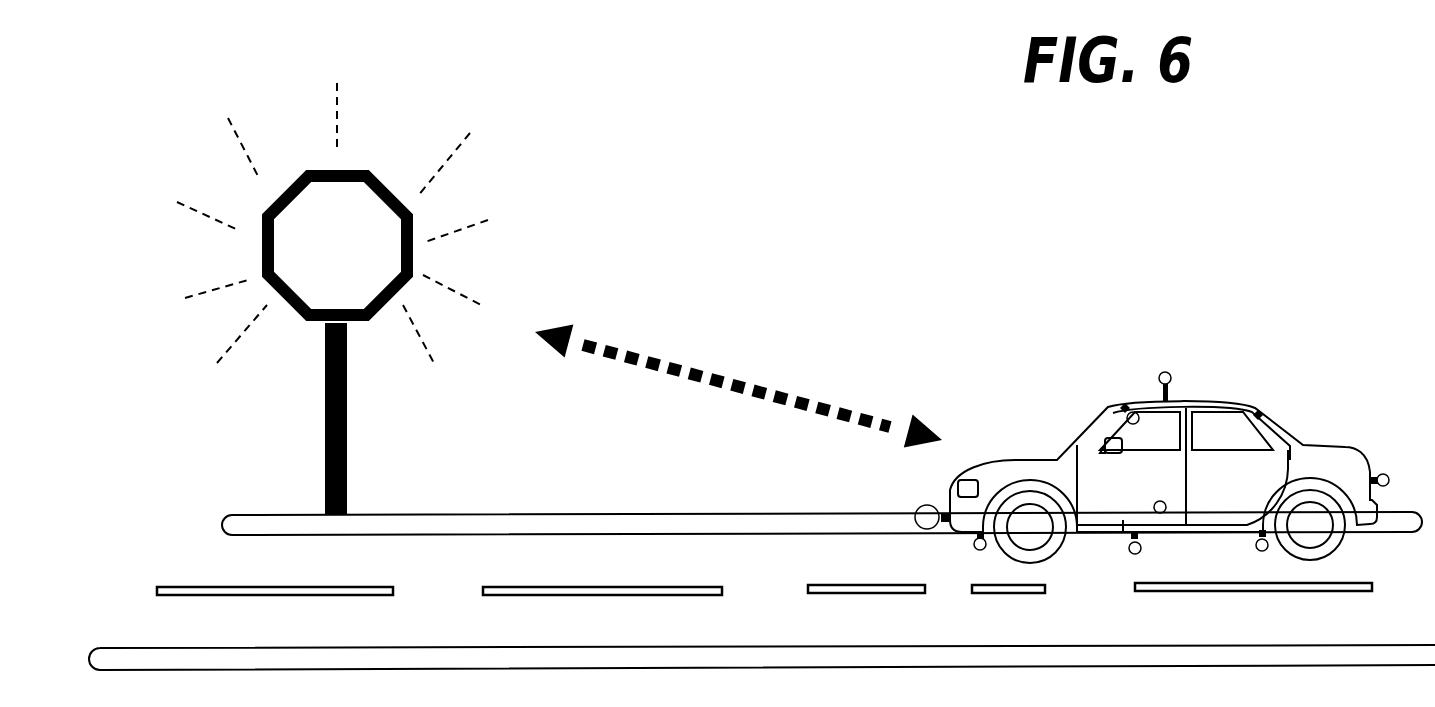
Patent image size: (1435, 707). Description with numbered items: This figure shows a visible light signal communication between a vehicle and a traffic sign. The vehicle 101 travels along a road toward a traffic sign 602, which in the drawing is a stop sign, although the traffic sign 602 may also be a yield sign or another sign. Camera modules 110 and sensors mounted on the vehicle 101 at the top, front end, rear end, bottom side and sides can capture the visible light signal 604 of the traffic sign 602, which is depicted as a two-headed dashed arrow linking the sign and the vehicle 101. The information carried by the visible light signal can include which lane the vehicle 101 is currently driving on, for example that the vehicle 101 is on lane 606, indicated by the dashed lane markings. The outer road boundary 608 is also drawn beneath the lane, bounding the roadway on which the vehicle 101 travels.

The first vehicle 101 is at (1335, 428).
The camera modules 110 is at (1173, 481).
The traffic sign 602 is at (368, 168).
The visible light signal 604 is at (803, 398).
The lane 606 is at (789, 569).
The road edge 608 is at (762, 634).